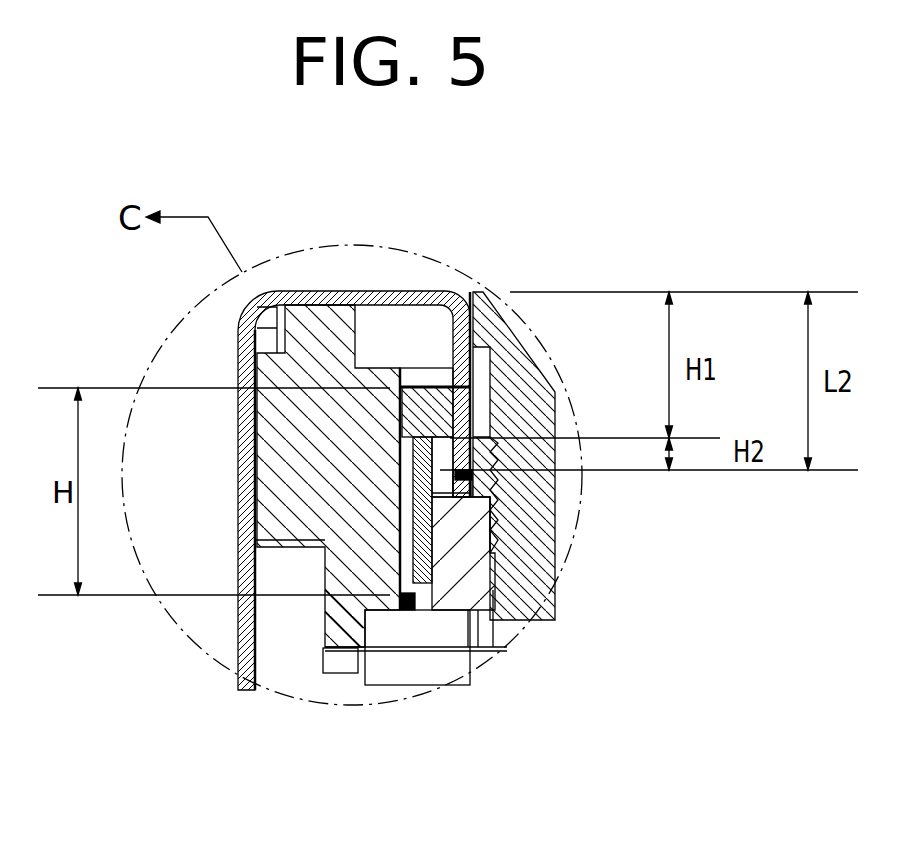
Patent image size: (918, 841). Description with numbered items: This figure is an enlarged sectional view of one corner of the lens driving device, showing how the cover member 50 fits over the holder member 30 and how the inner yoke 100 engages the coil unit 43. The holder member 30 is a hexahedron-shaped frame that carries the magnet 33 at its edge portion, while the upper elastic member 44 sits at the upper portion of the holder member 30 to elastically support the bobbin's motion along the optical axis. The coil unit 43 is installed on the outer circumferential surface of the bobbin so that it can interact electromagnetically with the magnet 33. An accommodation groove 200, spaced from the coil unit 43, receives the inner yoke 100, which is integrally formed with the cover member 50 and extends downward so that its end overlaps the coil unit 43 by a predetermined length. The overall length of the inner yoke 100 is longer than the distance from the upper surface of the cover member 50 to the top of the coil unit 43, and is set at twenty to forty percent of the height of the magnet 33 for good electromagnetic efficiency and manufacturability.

The holder member 30 is at (316, 323).
The magnet 33 is at (424, 385).
The coil unit 43 is at (420, 549).
The upper elastic member 44 is at (383, 345).
The cover member 50 is at (238, 339).
The inner yoke 100 is at (477, 293).
The accommodation groove 200 is at (462, 478).